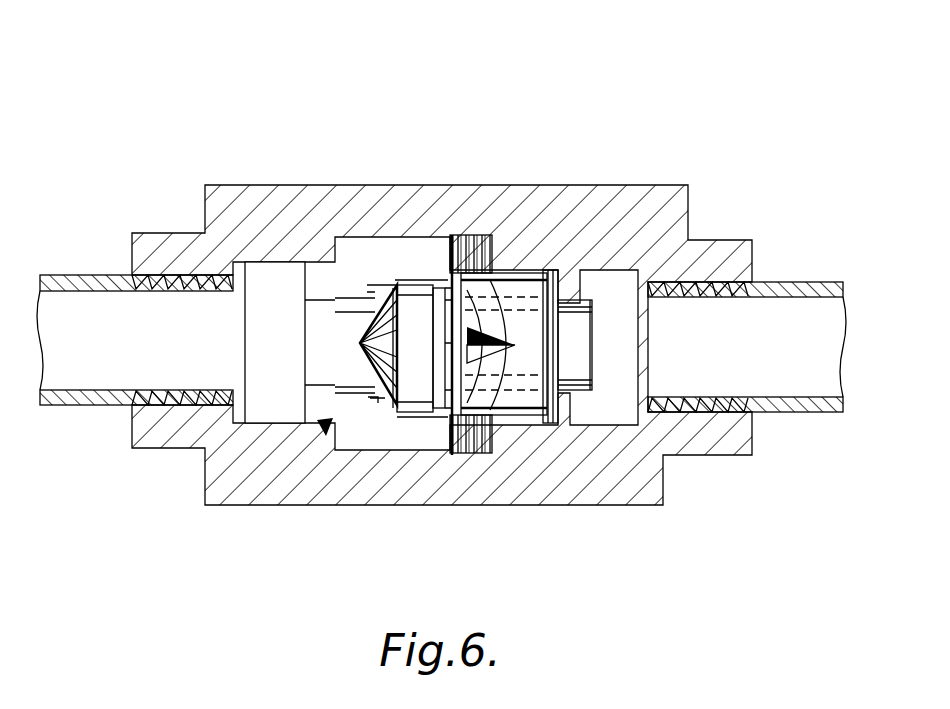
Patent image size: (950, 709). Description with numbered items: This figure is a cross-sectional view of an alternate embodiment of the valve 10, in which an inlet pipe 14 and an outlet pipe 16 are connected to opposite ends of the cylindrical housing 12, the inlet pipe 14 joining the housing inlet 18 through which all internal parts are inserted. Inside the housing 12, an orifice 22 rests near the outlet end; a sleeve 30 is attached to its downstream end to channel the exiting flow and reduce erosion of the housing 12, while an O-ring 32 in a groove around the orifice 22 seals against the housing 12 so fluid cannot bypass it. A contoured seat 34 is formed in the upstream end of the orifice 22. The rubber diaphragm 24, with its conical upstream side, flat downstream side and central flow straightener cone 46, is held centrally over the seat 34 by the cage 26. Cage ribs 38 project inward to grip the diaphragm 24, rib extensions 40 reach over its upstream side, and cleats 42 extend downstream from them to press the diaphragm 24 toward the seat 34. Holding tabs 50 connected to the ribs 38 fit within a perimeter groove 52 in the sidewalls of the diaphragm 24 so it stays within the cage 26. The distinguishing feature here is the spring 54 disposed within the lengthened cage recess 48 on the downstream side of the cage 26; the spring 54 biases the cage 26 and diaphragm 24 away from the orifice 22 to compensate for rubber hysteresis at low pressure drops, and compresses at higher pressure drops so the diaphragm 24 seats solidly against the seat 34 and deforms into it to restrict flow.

The valve 10 is at (156, 88).
The housing 12 is at (658, 210).
The inlet pipe 14 is at (85, 405).
The outlet pipe 16 is at (798, 288).
The housing inlet 18 is at (163, 240).
The orifice 22 is at (543, 423).
The diaphragm 24 is at (418, 430).
The cage 26 is at (277, 490).
The sleeve 30 is at (572, 302).
The O-ring 32 is at (548, 272).
The seat 34 is at (507, 413).
The cage ribs 38 is at (398, 413).
The rib extensions 40 is at (360, 285).
The cleats 42 is at (397, 280).
The flow straightener cone 46 is at (518, 278).
The cage recess 48 is at (355, 298).
The holding tabs 50 is at (436, 288).
The perimeter groove 52 is at (455, 248).
The spring 54 is at (472, 423).